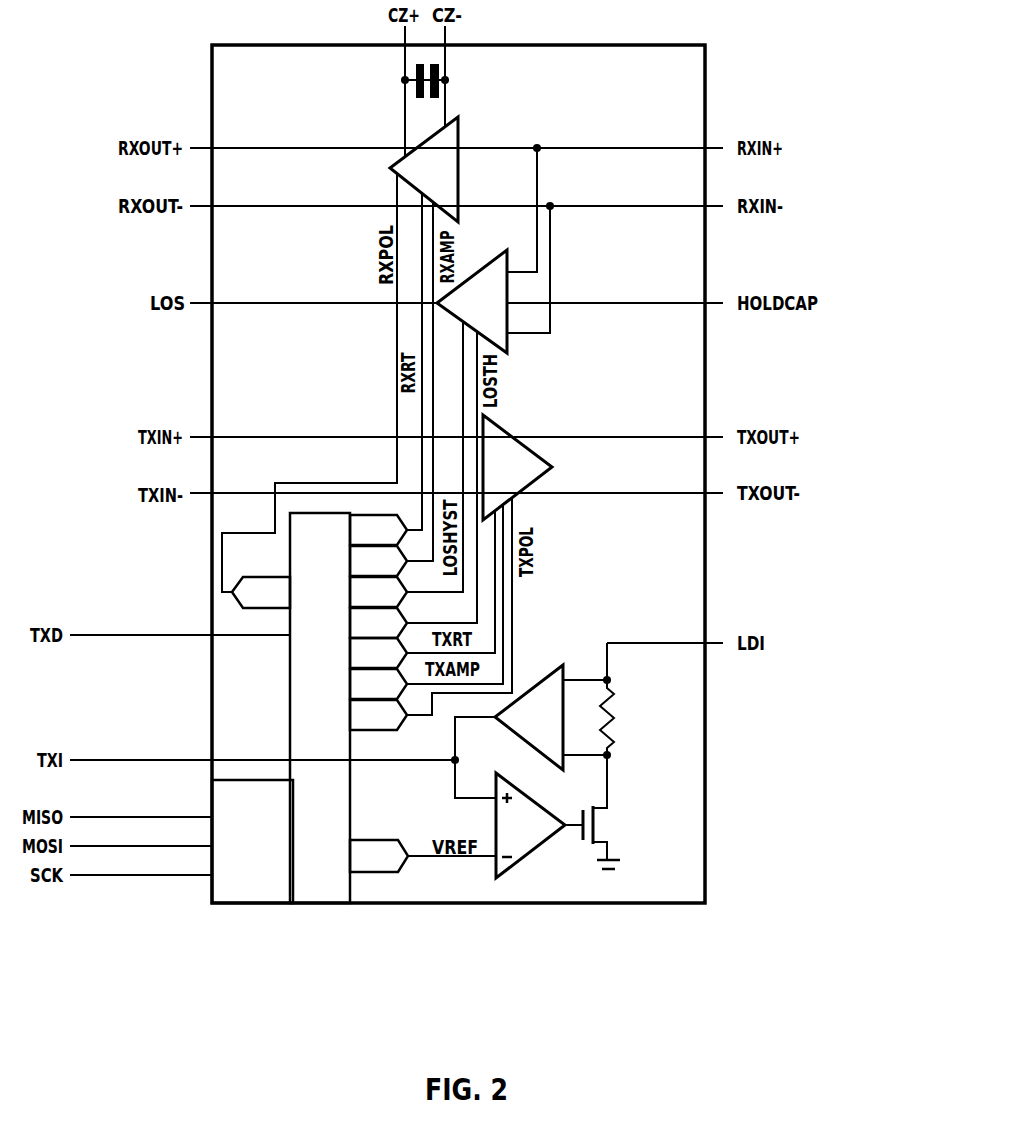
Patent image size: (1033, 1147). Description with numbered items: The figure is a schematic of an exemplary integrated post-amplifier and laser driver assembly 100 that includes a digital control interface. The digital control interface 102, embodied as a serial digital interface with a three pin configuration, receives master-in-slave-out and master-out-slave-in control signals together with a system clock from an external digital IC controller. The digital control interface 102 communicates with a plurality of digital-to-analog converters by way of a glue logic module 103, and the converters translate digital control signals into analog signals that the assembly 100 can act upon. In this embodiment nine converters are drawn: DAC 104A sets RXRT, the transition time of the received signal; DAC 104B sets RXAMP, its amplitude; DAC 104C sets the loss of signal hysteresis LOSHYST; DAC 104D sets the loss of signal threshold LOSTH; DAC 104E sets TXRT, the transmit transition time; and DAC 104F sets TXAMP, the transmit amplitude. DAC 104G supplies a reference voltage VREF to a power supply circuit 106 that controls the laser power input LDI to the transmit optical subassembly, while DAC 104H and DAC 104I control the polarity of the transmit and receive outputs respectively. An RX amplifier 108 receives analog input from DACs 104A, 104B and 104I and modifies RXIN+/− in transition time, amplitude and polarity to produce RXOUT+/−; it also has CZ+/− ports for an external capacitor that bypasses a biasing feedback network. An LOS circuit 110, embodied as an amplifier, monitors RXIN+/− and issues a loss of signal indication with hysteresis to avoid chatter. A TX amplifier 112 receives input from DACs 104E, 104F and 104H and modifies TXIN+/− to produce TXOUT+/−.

The integrated post-amplifier and laser driver assembly 100 is at (723, 102).
The digital control interface 102 is at (247, 905).
The glue logic module 103 is at (325, 905).
The DAC 104A is at (350, 532).
The DAC 104B is at (350, 562).
The DAC 104C is at (350, 592).
The DAC 104D is at (350, 623).
The DAC 104E is at (350, 653).
The DAC 104F is at (350, 684).
The DAC 104G is at (380, 875).
The DAC 104H is at (350, 715).
The DAC 104I is at (238, 603).
The power supply circuit 106 is at (582, 668).
The RX amplifier 108 is at (460, 135).
The LOS circuit 110 is at (508, 345).
The TX amplifier 112 is at (535, 481).